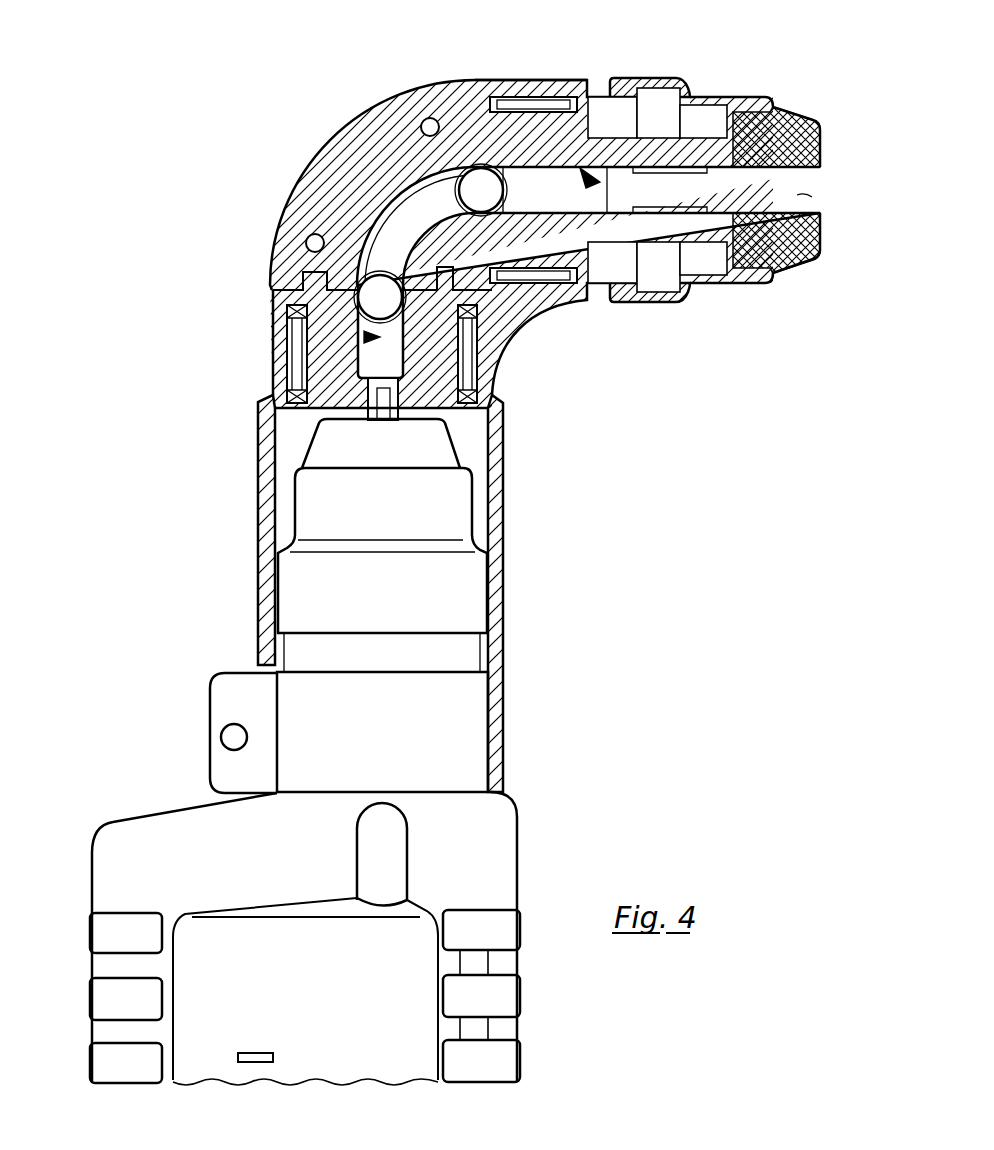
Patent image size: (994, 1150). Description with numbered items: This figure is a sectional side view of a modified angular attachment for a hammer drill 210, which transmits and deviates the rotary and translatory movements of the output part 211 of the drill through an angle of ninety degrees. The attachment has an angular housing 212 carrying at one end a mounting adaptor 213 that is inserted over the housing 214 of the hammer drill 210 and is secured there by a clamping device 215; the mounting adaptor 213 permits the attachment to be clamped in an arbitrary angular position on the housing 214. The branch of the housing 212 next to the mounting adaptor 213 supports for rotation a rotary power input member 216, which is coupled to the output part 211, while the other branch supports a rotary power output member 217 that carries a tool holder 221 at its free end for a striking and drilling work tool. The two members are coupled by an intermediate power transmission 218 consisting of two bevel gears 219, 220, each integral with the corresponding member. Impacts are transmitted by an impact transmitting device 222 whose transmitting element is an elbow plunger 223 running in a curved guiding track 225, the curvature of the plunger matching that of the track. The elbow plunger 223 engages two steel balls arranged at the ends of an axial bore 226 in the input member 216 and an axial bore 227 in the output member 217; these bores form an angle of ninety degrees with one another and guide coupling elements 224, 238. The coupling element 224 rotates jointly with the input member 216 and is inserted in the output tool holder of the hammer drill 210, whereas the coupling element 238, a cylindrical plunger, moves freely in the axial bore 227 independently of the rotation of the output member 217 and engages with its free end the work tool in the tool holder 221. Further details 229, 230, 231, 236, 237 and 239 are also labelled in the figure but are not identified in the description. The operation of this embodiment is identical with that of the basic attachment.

The hammer drill 210 is at (315, 1004).
The output part 211 is at (455, 495).
The angular housing 212 is at (417, 100).
The mounting adaptor 213 is at (290, 510).
The housing of the hammer drill 214 is at (495, 857).
The clamping device 215 is at (234, 733).
The rotary power input member 216 is at (262, 408).
The rotary power output member 217 is at (557, 250).
The intermediate power transmission 218 is at (430, 200).
The bevel gear 219 is at (303, 289).
The bevel gear 220 is at (470, 76).
The tool holder 221 is at (797, 195).
The impact transmitting device 222 is at (338, 188).
The elbow plunger 223 is at (347, 200).
The coupling element 224 is at (373, 355).
The curved guiding track 225 is at (357, 223).
The axial bore 226 is at (462, 325).
The axial bore 227 is at (503, 178).
The tube insert 229 is at (447, 255).
The spring seat 230 is at (327, 378).
The ball 231 is at (364, 337).
The elbow wall 236 is at (386, 165).
The valve seat 237 is at (373, 297).
The coupling element 238 is at (640, 130).
The nozzle tip 239 is at (667, 147).